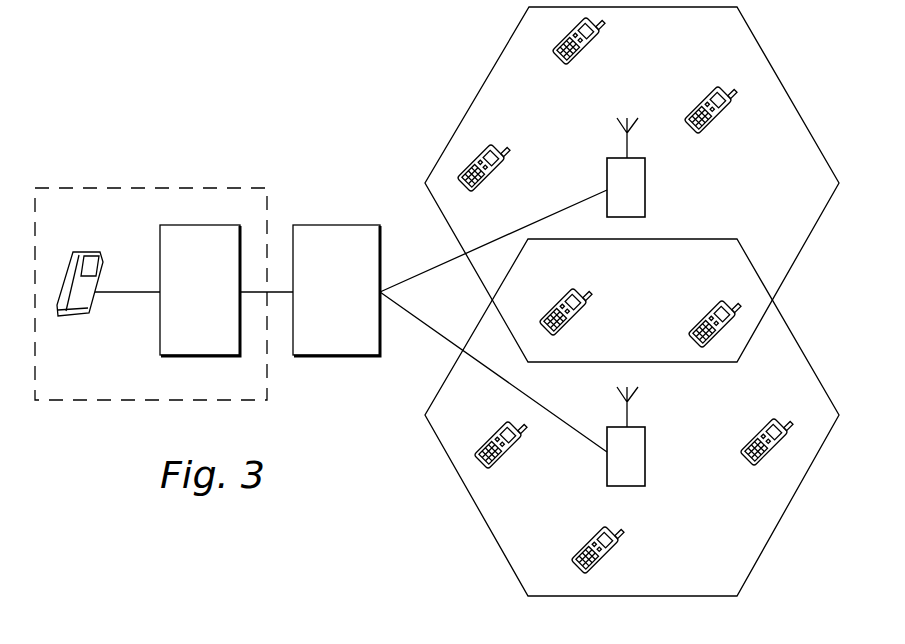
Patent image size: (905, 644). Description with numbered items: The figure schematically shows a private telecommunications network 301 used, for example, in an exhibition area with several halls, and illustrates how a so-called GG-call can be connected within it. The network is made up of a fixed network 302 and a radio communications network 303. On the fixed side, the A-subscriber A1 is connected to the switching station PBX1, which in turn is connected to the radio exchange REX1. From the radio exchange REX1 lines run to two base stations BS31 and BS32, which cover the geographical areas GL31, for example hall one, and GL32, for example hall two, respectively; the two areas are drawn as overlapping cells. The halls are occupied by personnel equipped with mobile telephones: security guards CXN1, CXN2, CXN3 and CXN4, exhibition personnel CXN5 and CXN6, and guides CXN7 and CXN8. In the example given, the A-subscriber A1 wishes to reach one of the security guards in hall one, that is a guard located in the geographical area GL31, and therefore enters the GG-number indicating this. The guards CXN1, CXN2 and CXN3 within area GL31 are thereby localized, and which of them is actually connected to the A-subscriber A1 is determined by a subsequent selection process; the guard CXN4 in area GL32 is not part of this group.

The private telecommunications network 301 is at (165, 56).
The fixed network 302 is at (153, 187).
The radio communications network 303 is at (341, 116).
The A-subscriber A1 is at (73, 318).
The switching station PBX1 is at (226, 290).
The radio exchange REX1 is at (450, 321).
The geographical area GL31 is at (768, 58).
The geographical area GL32 is at (797, 338).
The base station BS31 is at (645, 186).
The base station BS32 is at (645, 453).
The security guard mobile telephone CXN1 is at (572, 63).
The security guard mobile telephone CXN2 is at (700, 92).
The security guard mobile telephone CXN3 is at (575, 326).
The security guard mobile telephone CXN4 is at (608, 557).
The exhibition personnel mobile telephone CXN5 is at (506, 456).
The exhibition personnel mobile telephone CXN6 is at (490, 176).
The guide mobile telephone CXN7 is at (750, 430).
The guide mobile telephone CXN8 is at (703, 310).